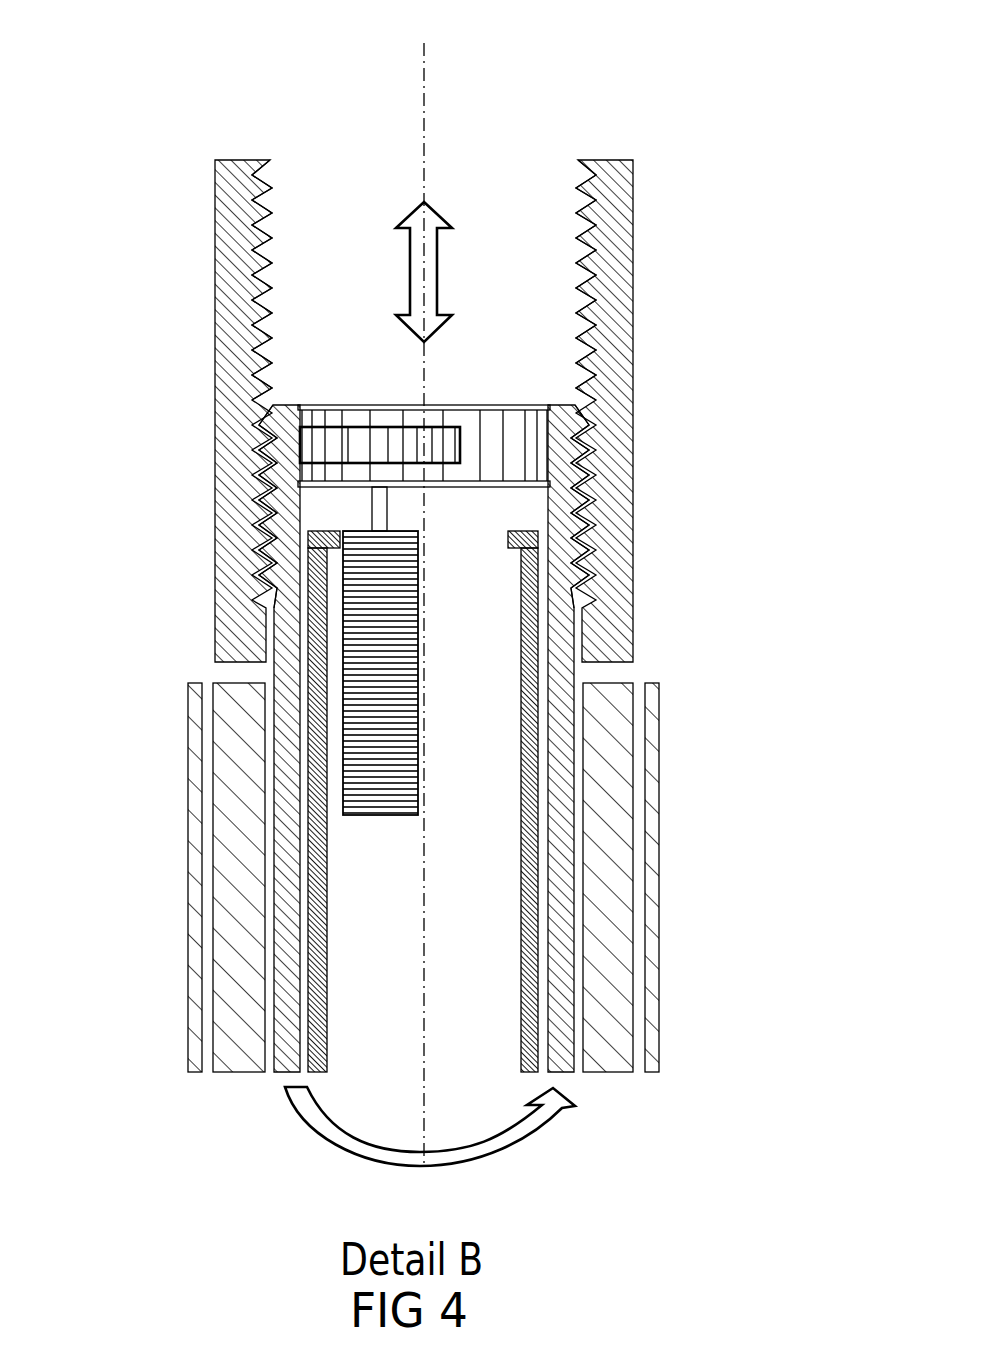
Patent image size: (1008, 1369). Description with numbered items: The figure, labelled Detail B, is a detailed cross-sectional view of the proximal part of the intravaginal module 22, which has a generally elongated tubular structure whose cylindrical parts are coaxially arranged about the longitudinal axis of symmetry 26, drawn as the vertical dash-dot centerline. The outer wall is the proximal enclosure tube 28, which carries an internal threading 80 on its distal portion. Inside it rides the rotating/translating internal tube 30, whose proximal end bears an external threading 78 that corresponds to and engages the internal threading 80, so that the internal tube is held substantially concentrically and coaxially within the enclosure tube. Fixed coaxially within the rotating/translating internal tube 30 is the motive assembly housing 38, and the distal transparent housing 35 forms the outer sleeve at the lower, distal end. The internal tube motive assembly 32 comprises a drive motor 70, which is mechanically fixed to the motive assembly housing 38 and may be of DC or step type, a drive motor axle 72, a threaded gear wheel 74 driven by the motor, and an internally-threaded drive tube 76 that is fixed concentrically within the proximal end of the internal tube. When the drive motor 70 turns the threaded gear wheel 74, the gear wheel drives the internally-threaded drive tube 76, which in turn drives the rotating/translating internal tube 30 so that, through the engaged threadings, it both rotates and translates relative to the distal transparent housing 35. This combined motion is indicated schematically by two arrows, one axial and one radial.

The intravaginal module 22 is at (187, 52).
The longitudinal axis of symmetry 26 is at (425, 77).
The proximal enclosure tube 28 is at (213, 345).
The rotating/translating internal tube 30 is at (290, 852).
The internal tube motive assembly 32 is at (467, 302).
The distal transparent housing 35 is at (632, 886).
The motive assembly housing 38 is at (530, 603).
The drive motor 70 is at (350, 668).
The drive motor axle 72 is at (390, 512).
The threaded gear wheel 74 is at (352, 425).
The internally-threaded drive tube 76 is at (510, 406).
The external threading 78 is at (265, 472).
The internal threading 80 is at (578, 245).